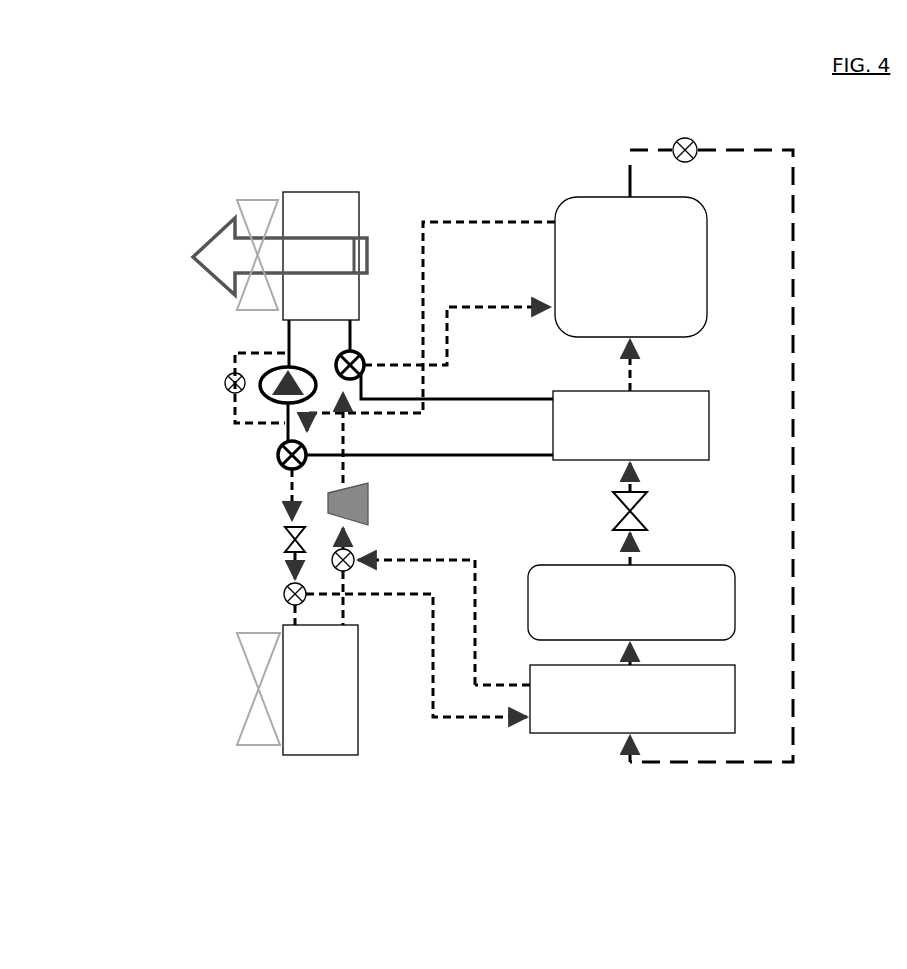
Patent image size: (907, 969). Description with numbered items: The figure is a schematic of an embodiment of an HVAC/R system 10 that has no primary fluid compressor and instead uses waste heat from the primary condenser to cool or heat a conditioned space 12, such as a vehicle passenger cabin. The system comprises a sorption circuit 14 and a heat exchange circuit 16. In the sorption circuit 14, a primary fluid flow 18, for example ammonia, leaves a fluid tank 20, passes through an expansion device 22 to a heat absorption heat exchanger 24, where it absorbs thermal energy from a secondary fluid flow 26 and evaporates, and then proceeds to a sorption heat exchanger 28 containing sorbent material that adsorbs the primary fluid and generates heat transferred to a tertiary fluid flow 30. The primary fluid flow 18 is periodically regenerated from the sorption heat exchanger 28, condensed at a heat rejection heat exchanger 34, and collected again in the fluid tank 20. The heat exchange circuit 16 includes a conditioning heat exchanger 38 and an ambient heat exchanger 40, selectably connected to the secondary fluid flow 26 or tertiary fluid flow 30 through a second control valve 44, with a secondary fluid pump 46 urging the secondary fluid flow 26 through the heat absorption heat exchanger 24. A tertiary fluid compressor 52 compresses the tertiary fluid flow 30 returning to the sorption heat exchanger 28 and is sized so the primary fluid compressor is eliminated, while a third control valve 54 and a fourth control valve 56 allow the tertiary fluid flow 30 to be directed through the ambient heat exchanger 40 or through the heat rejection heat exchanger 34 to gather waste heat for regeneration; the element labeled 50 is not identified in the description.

The HVAC/R system 10 is at (126, 186).
The conditioned space 12 is at (210, 255).
The sorption circuit 14 is at (567, 170).
The heat exchange circuit 16 is at (314, 173).
The primary fluid flow 18 is at (793, 246).
The fluid tank 20 is at (631, 602).
The expansion device 22 is at (642, 517).
The heat absorption heat exchanger 24 is at (631, 425).
The secondary fluid flow 26 is at (531, 398).
The sorption heat exchanger 28 is at (631, 267).
The tertiary fluid flow 30 is at (483, 218).
The heat rejection heat exchanger 34 is at (632, 699).
The conditioning heat exchanger 38 is at (321, 256).
The ambient heat exchanger 40 is at (297, 690).
The second control valve 44 is at (359, 351).
The secondary fluid pump 46 is at (264, 368).
The fan 50 is at (218, 234).
The tertiary fluid compressor 52 is at (372, 500).
The third control valve 54 is at (290, 601).
The fourth control valve 56 is at (331, 561).